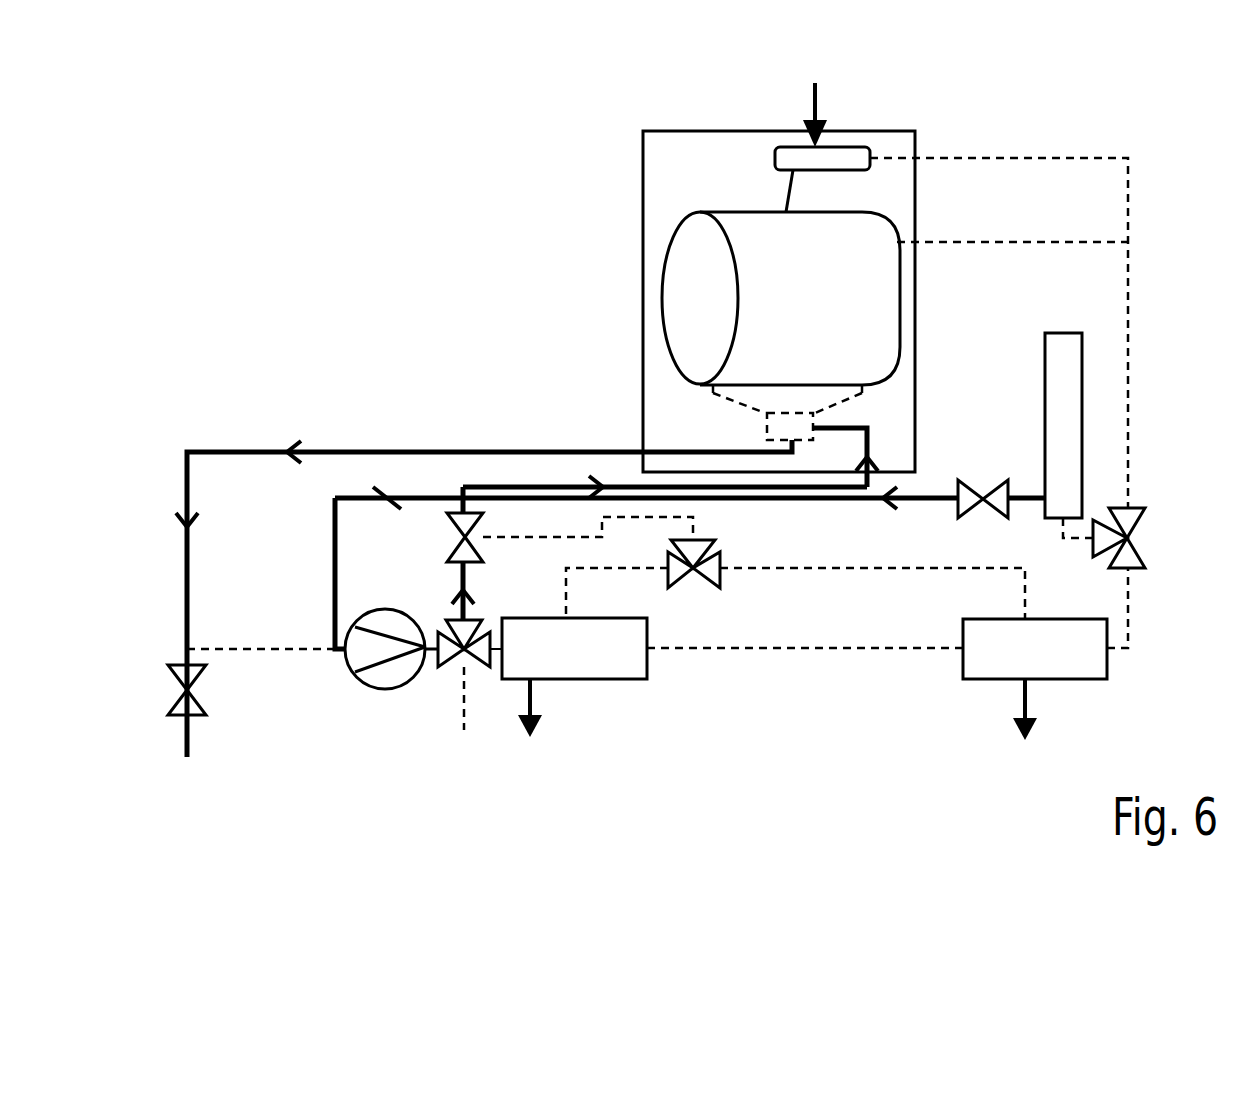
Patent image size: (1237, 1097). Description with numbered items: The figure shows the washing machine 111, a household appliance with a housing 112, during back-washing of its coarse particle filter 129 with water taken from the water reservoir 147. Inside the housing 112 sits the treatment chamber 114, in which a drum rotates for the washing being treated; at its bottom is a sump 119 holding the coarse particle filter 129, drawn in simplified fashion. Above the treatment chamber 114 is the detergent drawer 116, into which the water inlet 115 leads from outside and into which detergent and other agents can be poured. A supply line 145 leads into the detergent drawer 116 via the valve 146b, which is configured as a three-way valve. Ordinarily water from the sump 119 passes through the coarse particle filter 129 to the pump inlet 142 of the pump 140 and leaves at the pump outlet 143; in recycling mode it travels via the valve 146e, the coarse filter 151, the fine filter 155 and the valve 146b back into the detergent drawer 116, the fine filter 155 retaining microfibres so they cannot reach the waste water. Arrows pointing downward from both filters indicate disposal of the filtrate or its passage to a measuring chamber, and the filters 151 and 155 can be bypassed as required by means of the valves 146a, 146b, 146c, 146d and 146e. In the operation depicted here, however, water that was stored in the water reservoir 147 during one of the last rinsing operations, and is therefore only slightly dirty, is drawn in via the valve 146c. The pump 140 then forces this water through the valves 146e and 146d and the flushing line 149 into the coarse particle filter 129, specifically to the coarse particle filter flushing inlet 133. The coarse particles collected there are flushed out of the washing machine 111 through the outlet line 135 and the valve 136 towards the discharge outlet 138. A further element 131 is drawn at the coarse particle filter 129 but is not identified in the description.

The washing machine 111 is at (500, 205).
The housing 112 is at (643, 172).
The treatment chamber 114 is at (832, 308).
The water inlet 115 is at (818, 108).
The detergent drawer 116 is at (872, 157).
The sump 119 is at (735, 398).
The coarse particle filter 129 is at (767, 434).
The outlet 131 is at (811, 430).
The coarse particle filter flushing inlet 133 is at (790, 440).
The outlet line 135 is at (225, 448).
The valve 136 is at (200, 685).
The discharge outlet 138 is at (188, 757).
The pump 140 is at (385, 688).
The pump inlet 142 is at (340, 652).
The pump outlet 143 is at (428, 648).
The supply line 145 is at (1128, 215).
The valve 146a is at (720, 560).
The valve 146b is at (1145, 520).
The valve 146c is at (960, 512).
The valve 146d is at (447, 522).
The valve 146e is at (482, 632).
The water reservoir 147 is at (1082, 422).
The flushing line 149 is at (870, 440).
The coarse filter 151 is at (605, 680).
The fine filter 155 is at (990, 680).